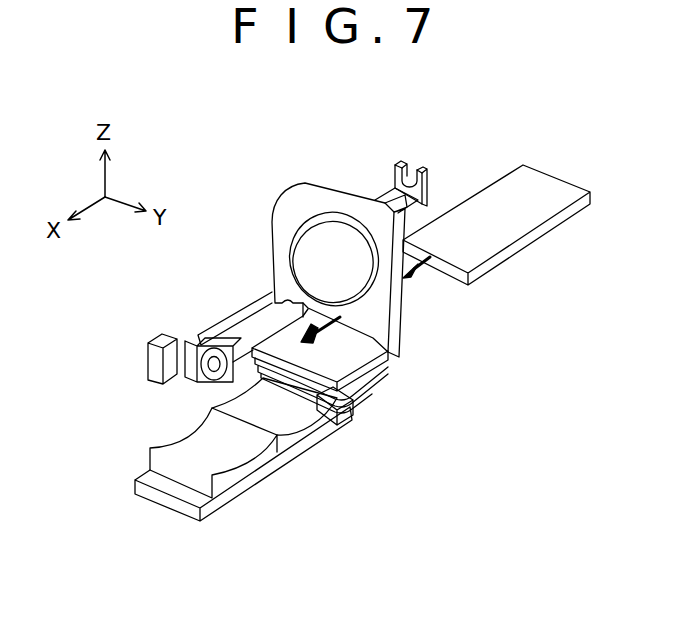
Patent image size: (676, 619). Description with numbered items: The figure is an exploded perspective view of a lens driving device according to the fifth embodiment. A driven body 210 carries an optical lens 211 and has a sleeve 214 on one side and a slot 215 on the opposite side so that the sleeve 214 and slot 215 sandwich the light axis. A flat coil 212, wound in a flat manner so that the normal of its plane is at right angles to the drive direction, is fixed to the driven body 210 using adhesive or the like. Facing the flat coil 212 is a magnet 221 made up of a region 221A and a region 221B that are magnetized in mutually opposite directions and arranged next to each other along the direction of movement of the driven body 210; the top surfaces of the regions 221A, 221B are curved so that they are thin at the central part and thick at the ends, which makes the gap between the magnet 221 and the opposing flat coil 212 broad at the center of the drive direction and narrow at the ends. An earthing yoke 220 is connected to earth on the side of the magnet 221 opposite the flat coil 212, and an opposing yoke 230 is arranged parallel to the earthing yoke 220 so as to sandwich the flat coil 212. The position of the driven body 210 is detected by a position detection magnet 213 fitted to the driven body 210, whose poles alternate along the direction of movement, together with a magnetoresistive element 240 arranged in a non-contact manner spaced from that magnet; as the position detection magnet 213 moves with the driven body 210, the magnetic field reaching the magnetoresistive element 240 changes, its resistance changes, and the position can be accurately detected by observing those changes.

The driven body 210 is at (312, 202).
The optical lens 211 is at (308, 255).
The flat coil 212 is at (343, 400).
The position detection magnet 213 is at (236, 311).
The sleeve 214 is at (214, 386).
The slot 215 is at (395, 175).
The earthing yoke 220 is at (172, 507).
The magnet 221 is at (148, 449).
The region 221A is at (245, 478).
The region 221B is at (304, 445).
The opposing yoke 230 is at (485, 220).
The magnetoresistive element 240 is at (161, 334).